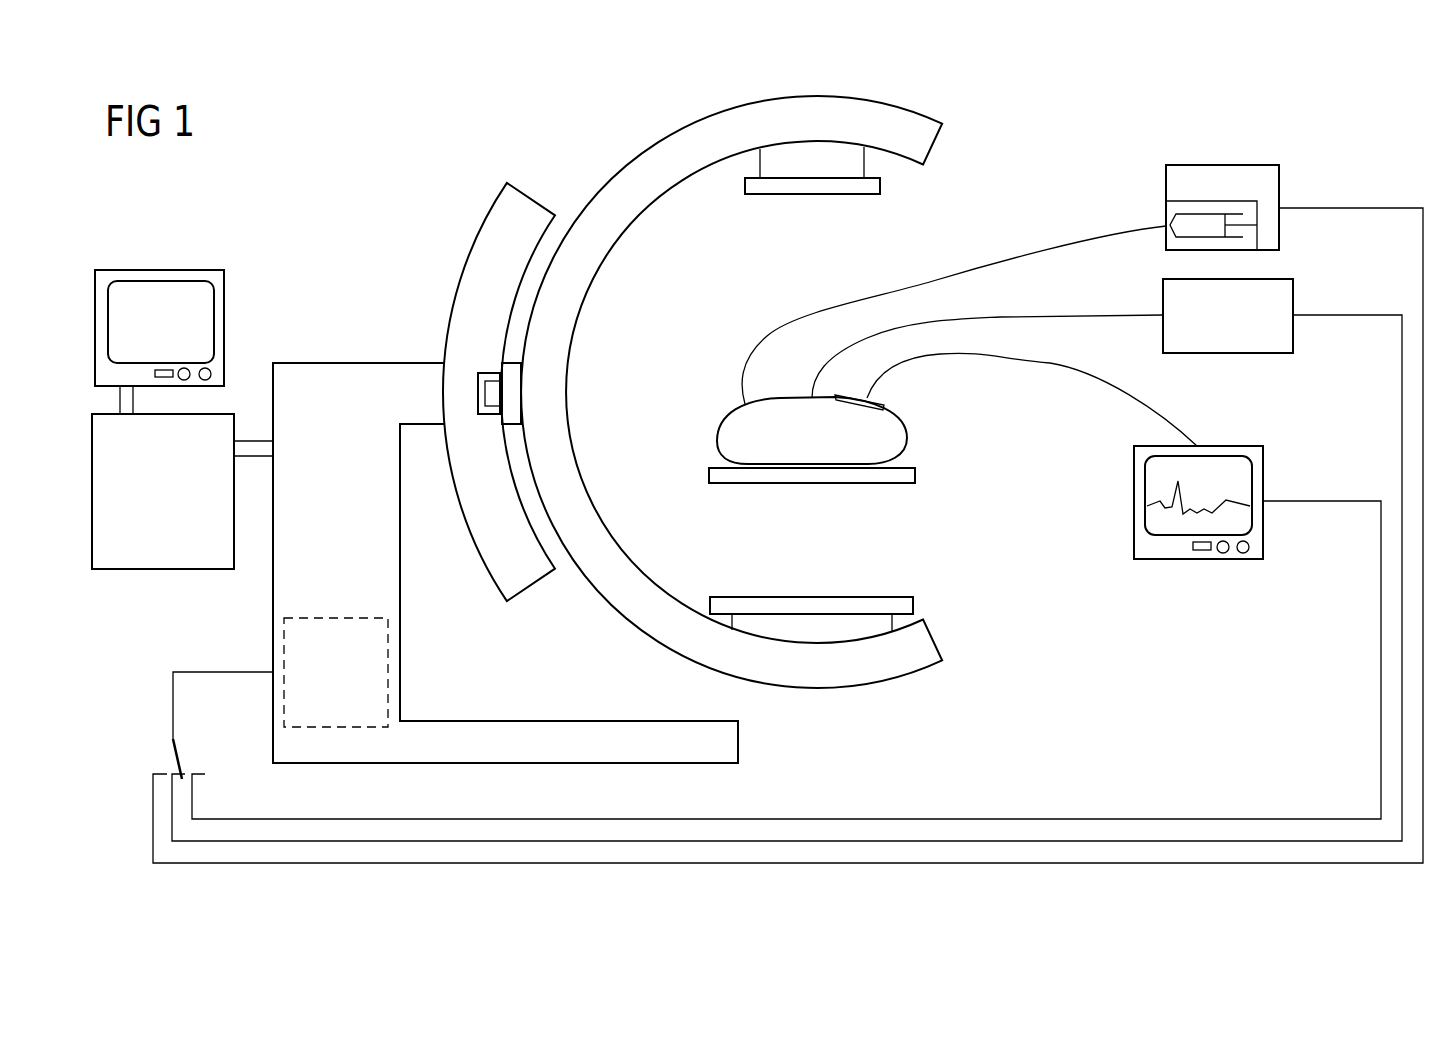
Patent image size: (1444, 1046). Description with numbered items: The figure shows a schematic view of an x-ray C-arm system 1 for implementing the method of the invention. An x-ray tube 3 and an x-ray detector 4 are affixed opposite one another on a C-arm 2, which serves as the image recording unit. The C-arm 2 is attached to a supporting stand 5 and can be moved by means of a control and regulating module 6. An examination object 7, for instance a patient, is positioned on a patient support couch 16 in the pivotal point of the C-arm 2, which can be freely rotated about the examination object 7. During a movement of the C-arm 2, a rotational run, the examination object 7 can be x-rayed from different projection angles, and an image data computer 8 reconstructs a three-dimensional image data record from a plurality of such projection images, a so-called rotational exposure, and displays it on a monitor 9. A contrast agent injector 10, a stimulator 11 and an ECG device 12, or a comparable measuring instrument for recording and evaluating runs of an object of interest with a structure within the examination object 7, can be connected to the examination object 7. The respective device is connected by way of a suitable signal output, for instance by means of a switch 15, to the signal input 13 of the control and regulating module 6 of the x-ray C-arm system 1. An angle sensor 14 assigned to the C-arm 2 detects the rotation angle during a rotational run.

The x-ray C-arm system 1 is at (1007, 124).
The C-arm 2 is at (628, 184).
The x-ray tube 3 is at (789, 193).
The x-ray detector 4 is at (762, 596).
The supporting stand 5 is at (325, 362).
The control and regulating module 6 is at (341, 617).
The examination object 7 is at (730, 424).
The image data computer 8 is at (153, 570).
The monitor 9 is at (164, 269).
The contrast agent injector 10 is at (1166, 182).
The stimulator 11 is at (1163, 292).
The ECG device 12 is at (1134, 493).
The signal input 13 is at (273, 671).
The angle sensor 14 is at (493, 405).
The switch 15 is at (173, 752).
The patient support couch 16 is at (880, 482).